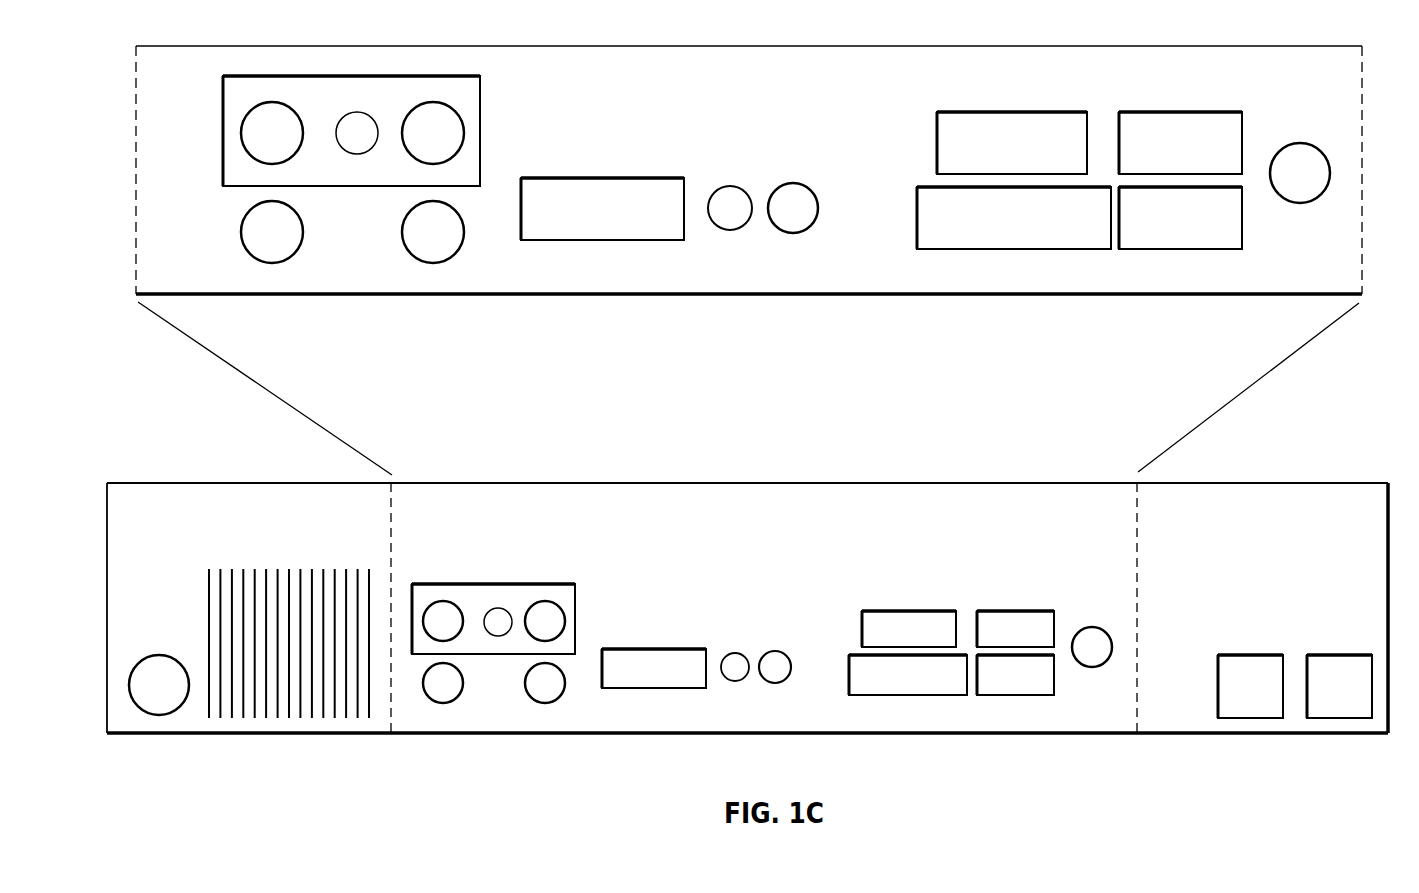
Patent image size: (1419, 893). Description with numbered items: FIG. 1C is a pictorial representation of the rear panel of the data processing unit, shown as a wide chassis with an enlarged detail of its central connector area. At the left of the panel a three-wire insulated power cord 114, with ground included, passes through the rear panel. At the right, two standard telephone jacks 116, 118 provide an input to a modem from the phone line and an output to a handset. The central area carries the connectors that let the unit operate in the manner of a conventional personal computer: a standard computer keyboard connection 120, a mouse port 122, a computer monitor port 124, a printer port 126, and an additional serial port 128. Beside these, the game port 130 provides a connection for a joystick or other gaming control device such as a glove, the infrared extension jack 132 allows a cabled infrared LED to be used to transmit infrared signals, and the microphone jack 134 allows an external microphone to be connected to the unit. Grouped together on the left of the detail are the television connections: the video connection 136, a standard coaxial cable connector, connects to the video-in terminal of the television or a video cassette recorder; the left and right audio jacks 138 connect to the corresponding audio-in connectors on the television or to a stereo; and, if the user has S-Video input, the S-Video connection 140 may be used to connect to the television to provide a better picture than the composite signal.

The power cord 114 is at (162, 716).
The telephone jack 116 is at (1245, 655).
The telephone jack 118 is at (1330, 655).
The computer keyboard connection 120 is at (1331, 177).
The mouse port 122 is at (1181, 112).
The computer monitor port 124 is at (1033, 112).
The printer port 126 is at (926, 250).
The serial port 128 is at (1243, 216).
The game port 130 is at (590, 178).
The infrared extension jack 132 is at (737, 186).
The microphone jack 134 is at (800, 183).
The video connection 136 is at (465, 133).
The left and right audio jacks 138 is at (241, 138).
The S-Video connection 140 is at (435, 264).